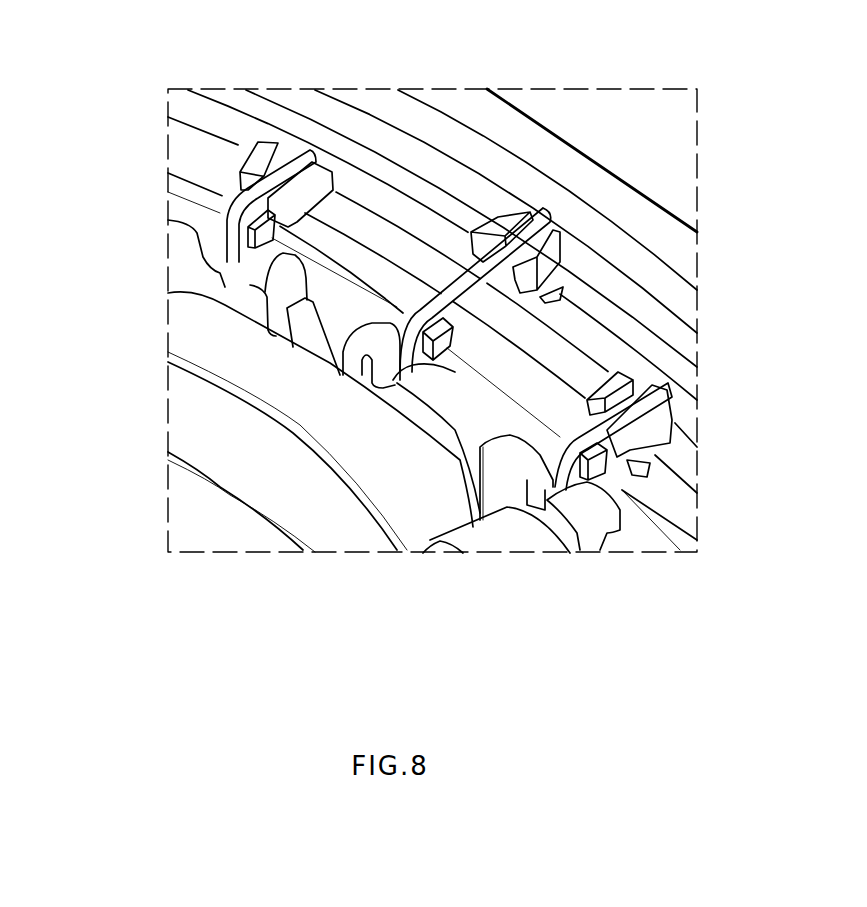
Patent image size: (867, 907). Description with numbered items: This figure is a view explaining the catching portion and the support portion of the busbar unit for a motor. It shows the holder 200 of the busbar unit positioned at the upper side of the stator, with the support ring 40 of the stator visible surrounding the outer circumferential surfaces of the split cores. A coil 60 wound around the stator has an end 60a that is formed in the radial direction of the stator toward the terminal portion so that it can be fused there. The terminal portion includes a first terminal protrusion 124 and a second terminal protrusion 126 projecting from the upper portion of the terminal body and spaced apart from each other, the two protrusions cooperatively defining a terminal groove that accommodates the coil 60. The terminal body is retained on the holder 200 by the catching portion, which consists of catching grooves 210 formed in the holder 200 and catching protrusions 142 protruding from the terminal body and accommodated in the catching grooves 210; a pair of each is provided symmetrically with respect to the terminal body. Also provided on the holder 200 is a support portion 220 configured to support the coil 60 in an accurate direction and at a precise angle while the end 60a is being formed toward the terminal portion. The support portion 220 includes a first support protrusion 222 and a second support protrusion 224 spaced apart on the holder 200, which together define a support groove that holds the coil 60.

The holder 200 is at (397, 177).
The first terminal protrusion 124 is at (495, 225).
The second terminal protrusion 126 is at (548, 237).
The support ring 40 is at (633, 195).
The catching protrusion 142 is at (563, 281).
The catching groove 210 is at (567, 340).
The support portion 220 is at (100, 355).
The first support protrusion 222 is at (403, 318).
The second support protrusion 224 is at (452, 350).
The coil 60 is at (337, 508).
The end of the coil 60a is at (477, 290).